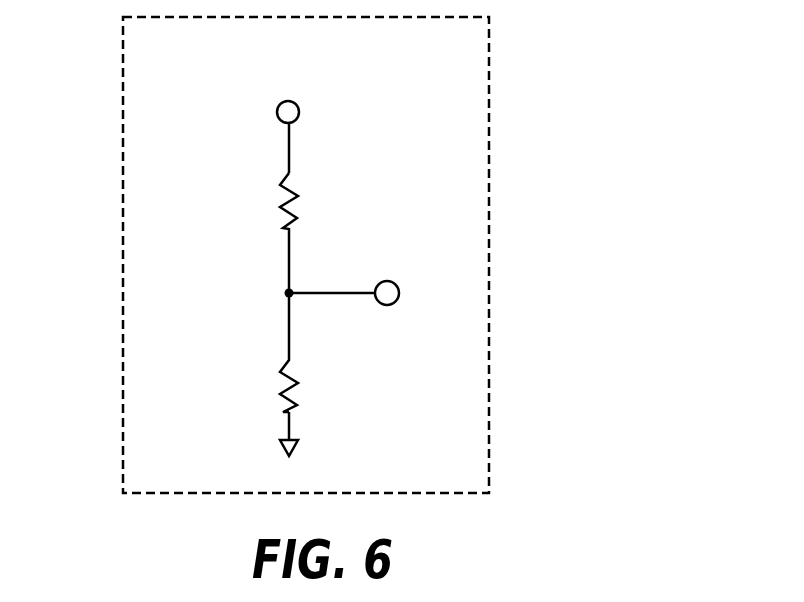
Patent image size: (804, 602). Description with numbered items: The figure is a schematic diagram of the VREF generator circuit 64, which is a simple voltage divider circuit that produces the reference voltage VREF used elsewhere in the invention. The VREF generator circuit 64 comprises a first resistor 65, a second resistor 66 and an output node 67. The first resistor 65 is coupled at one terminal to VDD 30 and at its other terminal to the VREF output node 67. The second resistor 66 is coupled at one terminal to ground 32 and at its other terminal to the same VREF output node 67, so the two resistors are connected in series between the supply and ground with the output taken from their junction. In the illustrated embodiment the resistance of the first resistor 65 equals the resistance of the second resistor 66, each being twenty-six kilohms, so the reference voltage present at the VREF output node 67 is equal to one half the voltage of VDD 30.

The VREF generator circuit 64 is at (118, 268).
The VDD 30 is at (299, 108).
The first resistor 65 is at (298, 227).
The VREF output node 67 is at (284, 296).
The second resistor 66 is at (299, 411).
The ground 32 is at (278, 449).